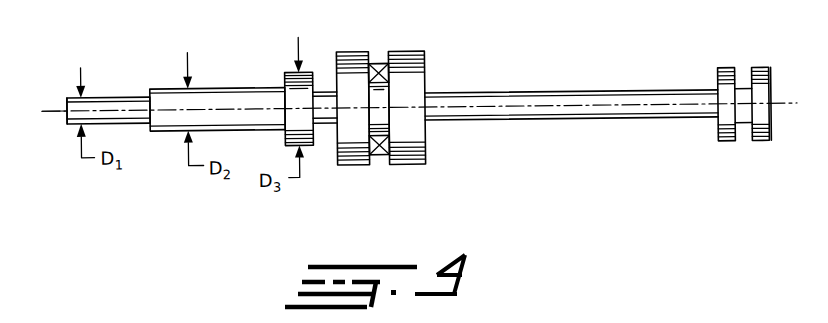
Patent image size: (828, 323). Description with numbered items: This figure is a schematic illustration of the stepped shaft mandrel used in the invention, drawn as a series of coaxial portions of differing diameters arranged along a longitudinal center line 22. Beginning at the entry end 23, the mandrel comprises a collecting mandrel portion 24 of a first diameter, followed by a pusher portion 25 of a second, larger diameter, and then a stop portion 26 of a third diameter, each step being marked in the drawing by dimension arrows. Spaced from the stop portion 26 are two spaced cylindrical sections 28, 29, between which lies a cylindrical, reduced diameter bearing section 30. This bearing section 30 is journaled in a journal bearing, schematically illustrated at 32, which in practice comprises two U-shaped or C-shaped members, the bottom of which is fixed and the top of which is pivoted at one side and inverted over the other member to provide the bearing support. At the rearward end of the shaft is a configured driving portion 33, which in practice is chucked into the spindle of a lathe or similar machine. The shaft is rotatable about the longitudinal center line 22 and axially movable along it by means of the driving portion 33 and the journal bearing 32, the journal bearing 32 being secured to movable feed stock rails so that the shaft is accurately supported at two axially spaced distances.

The longitudinal center line 22 is at (544, 107).
The entry end 23 is at (67, 103).
The collecting mandrel portion 24 is at (107, 98).
The pusher portion 25 is at (214, 90).
The stop portion 26 is at (293, 76).
The cylindrical section 28 is at (352, 55).
The cylindrical section 29 is at (412, 55).
The bearing section 30 is at (382, 125).
The journal bearing 32 is at (383, 160).
The driving portion 33 is at (755, 75).